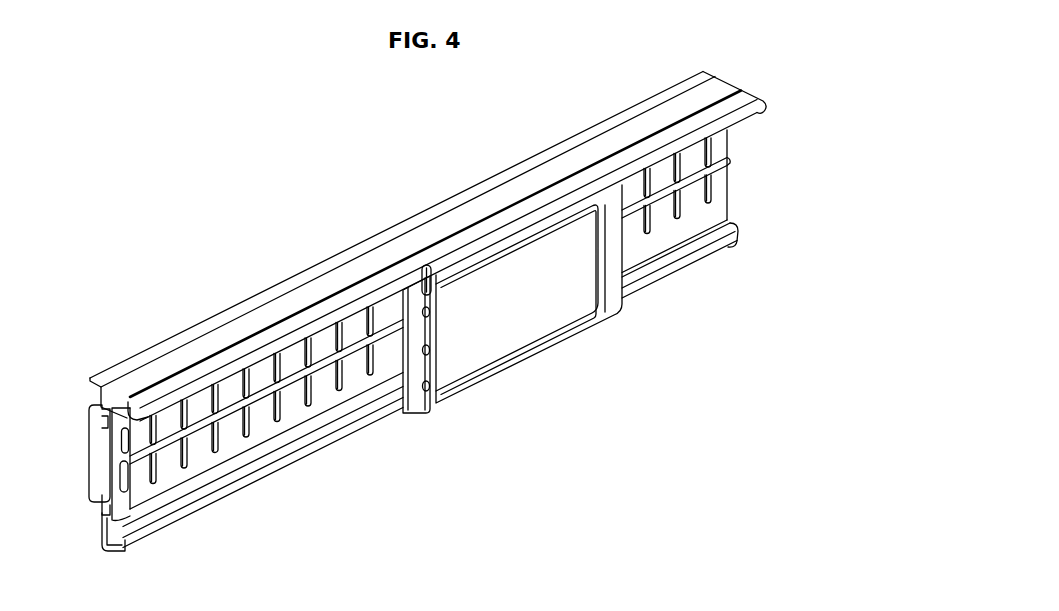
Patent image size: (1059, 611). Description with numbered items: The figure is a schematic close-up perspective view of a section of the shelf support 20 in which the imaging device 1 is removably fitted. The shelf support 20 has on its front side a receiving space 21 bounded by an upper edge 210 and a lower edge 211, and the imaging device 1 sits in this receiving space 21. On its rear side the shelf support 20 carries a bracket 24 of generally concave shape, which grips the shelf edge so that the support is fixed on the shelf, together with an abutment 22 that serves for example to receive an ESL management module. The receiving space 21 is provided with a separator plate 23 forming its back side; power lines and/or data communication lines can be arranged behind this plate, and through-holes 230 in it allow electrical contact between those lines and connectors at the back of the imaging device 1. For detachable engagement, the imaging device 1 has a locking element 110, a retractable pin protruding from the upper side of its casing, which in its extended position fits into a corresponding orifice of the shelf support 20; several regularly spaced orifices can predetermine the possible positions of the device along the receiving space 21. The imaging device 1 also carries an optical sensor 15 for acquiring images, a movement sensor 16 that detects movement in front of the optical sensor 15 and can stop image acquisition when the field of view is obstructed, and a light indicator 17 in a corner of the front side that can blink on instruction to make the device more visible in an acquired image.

The imaging device 1 is at (535, 310).
The locking element 110 is at (437, 290).
The optical sensor 15 is at (431, 314).
The movement sensor 16 is at (431, 352).
The light indicator 17 is at (432, 388).
The shelf support 20 is at (428, 310).
The receiving space 21 is at (728, 194).
The upper edge 210 is at (232, 350).
The lower edge 211 is at (300, 450).
The abutment 22 is at (115, 477).
The separator plate 23 is at (203, 460).
The through-holes 230 is at (126, 444).
The bracket 24 is at (85, 398).